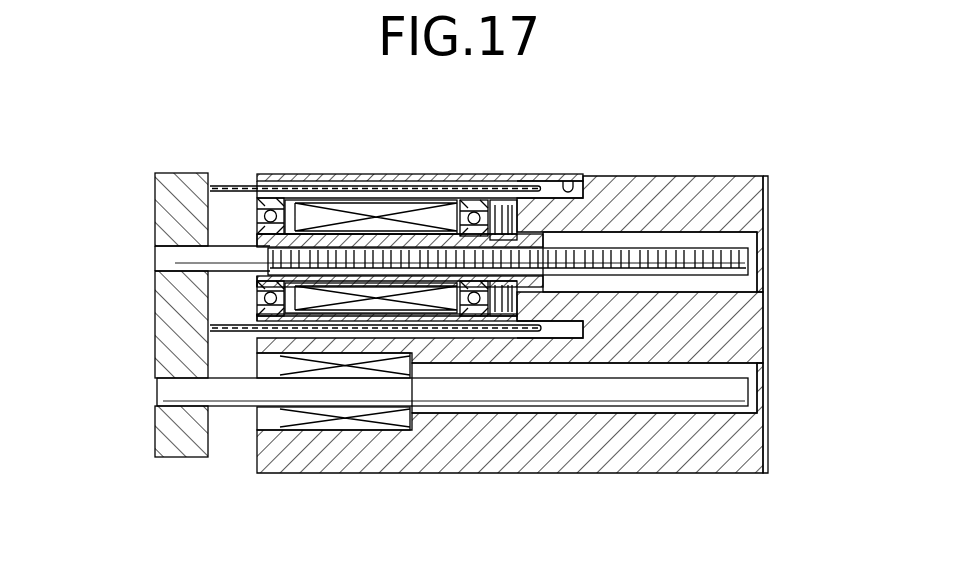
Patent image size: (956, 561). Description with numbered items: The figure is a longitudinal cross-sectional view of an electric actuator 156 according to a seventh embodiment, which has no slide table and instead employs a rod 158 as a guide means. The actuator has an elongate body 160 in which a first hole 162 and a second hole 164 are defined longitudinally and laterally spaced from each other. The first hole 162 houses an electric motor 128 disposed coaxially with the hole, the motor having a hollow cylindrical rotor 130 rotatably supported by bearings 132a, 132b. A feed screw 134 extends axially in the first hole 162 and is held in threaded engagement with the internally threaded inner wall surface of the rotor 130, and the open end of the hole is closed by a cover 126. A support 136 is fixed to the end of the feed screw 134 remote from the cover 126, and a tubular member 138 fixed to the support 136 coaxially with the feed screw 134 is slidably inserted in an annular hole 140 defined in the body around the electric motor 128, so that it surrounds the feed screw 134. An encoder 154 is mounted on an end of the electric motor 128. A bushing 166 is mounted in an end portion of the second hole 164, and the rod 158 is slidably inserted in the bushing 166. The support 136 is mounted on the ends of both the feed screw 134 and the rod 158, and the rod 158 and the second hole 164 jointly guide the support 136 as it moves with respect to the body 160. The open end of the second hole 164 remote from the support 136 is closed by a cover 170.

The cover 126 is at (768, 262).
The electric motor 128 is at (372, 178).
The rotor 130 is at (425, 200).
The bearing 132a is at (478, 198).
The bearing 132b is at (268, 198).
The feed screw 134 is at (160, 249).
The support 136 is at (160, 323).
The tubular member 138 is at (233, 183).
The annular hole 140 is at (568, 185).
The encoder 154 is at (513, 198).
The electric actuator 156 is at (767, 67).
The rod 158 is at (232, 400).
The elongate body 160 is at (614, 462).
The first hole 162 is at (687, 238).
The second hole 164 is at (465, 413).
The bushing 166 is at (330, 428).
The cover 170 is at (768, 396).